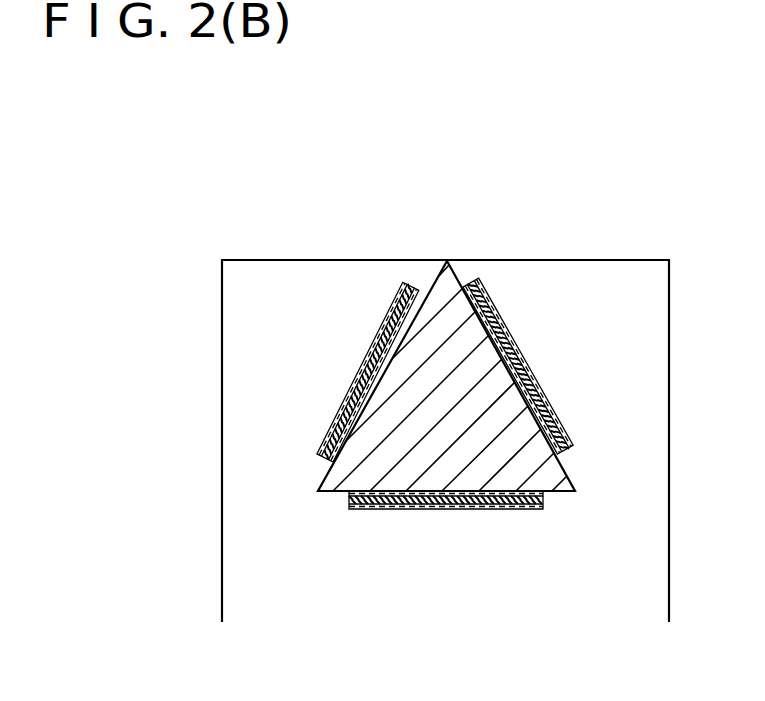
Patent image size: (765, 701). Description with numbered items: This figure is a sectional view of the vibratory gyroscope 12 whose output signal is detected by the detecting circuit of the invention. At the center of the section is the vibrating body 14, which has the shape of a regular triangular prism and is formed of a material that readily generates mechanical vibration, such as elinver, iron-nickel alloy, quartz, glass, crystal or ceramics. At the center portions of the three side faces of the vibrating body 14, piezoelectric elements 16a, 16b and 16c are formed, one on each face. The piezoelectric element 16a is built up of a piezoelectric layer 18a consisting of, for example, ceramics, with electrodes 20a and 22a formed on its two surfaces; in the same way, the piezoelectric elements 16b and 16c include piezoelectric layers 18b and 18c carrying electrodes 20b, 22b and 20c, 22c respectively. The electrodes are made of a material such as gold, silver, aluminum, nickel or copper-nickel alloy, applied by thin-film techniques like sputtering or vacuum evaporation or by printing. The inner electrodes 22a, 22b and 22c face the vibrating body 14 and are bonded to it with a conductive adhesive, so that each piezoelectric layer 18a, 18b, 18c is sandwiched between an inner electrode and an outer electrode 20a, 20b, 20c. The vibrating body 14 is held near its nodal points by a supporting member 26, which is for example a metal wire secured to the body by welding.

The vibratory gyroscope 12 is at (275, 160).
The vibrating body 14 is at (318, 491).
The piezoelectric element 16a is at (397, 300).
The piezoelectric element 16b is at (495, 300).
The piezoelectric element 16c is at (529, 510).
The piezoelectric layer 18a is at (351, 387).
The piezoelectric layer 18b is at (530, 367).
The piezoelectric layer 18c is at (408, 511).
The electrode 20a is at (374, 348).
The electrode 20b is at (510, 330).
The electrode 20c is at (465, 511).
The electrode 22a is at (330, 430).
The electrode 22b is at (554, 413).
The electrode 22c is at (362, 511).
The supporting member 26 is at (618, 260).